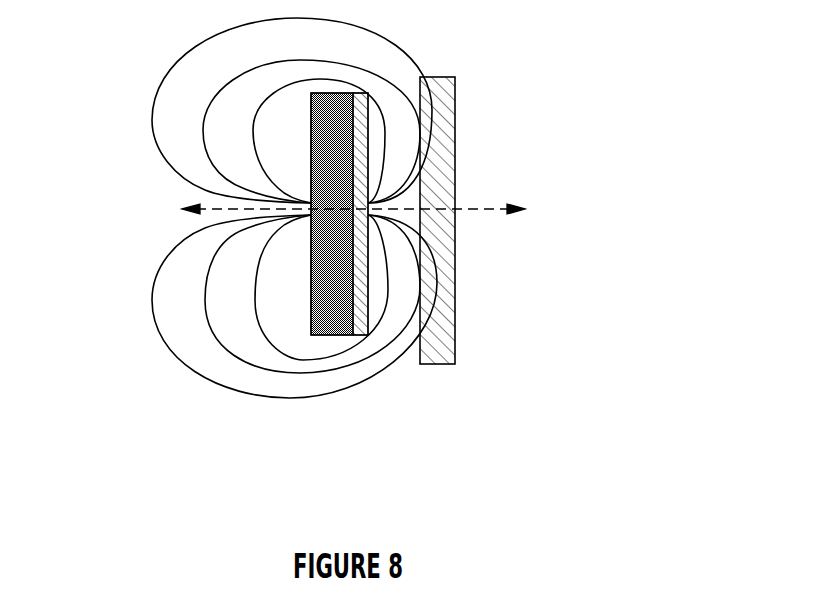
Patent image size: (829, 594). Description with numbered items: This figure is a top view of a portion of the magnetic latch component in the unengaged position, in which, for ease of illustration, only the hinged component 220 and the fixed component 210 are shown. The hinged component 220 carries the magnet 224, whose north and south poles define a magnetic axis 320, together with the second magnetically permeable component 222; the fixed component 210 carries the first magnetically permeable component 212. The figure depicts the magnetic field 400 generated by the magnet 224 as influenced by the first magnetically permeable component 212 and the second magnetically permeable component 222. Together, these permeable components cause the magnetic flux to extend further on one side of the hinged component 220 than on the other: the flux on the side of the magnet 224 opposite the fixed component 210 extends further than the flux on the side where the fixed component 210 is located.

The fixed component 210 is at (610, 201).
The first magnetically permeable component 212 is at (440, 140).
The hinged component 220 is at (317, 299).
The second magnetically permeable component 222 is at (358, 313).
The magnet 224 is at (337, 320).
The magnetic axis 320 is at (485, 208).
The magnetic field 400 is at (172, 188).